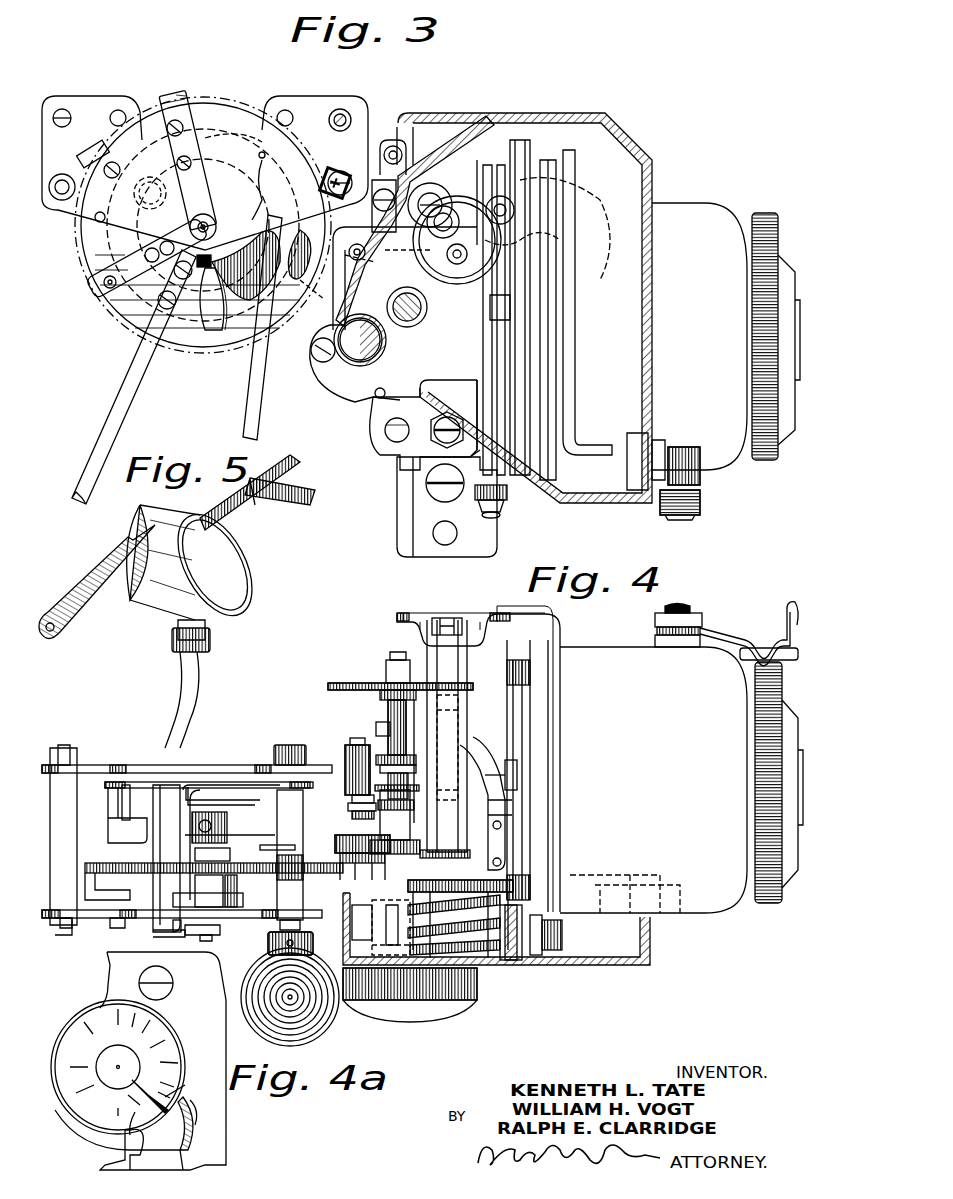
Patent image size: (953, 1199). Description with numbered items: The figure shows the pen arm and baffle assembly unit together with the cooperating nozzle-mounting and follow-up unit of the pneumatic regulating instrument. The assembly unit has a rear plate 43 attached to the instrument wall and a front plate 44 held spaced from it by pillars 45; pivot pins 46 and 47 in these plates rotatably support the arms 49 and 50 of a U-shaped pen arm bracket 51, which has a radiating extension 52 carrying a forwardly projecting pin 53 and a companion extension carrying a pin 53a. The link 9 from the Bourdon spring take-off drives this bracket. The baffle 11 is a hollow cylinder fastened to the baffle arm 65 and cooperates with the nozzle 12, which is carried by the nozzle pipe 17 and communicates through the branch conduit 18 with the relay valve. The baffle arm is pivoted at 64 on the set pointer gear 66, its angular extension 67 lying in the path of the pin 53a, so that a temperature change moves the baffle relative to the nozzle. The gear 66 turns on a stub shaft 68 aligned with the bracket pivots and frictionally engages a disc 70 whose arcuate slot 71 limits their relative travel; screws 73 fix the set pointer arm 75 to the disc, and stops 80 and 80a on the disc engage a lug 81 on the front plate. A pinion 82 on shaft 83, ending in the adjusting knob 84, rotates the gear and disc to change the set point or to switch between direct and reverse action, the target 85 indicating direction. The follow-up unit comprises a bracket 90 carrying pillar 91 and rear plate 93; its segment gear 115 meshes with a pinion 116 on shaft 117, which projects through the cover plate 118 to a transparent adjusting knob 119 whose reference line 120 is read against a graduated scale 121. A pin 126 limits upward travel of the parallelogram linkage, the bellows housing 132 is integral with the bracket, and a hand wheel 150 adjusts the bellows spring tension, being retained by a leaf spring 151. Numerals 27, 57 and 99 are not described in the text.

In FIG. 3, the link 9 is at (258, 406).
In FIG. 5, the baffle 11 is at (248, 585).
In FIG. 3, the nozzle 12 is at (238, 280).
In FIG. 5, the nozzle 12 is at (212, 638).
In FIG. 4, the nozzle 12 is at (166, 858).
In FIG. 3, the nozzle pipe 17 is at (310, 340).
In FIG. 4, the nozzle pipe 17 is at (349, 892).
In FIG. 4A, the branch conduit 18 is at (215, 1128).
In FIG. 4, the lever 27 is at (480, 845).
In FIG. 4, the rear plate 43 is at (232, 758).
In FIG. 4, the front plate 44 is at (148, 910).
In FIG. 4, the pillars 45 is at (52, 826).
In FIG. 4, the pivot pin 46 is at (223, 801).
In FIG. 4, the pivot pin 47 is at (215, 940).
In FIG. 4, the arm 49 is at (190, 780).
In FIG. 3, the arm 50 is at (193, 203).
In FIG. 4, the arm 50 is at (196, 938).
In FIG. 3, the pen arm bracket 51 is at (170, 100).
In FIG. 4, the pen arm bracket 51 is at (190, 815).
In FIG. 4, the extension 52 is at (268, 790).
In FIG. 4, the pin 53 is at (305, 803).
In FIG. 4, the pin 53a is at (107, 785).
In FIG. 3, the dial 57 is at (233, 142).
In FIG. 4, the pivot 64 is at (295, 839).
In FIG. 5, the baffle arm 65 is at (92, 575).
In FIG. 4, the set pointer gear 66 is at (97, 878).
In FIG. 5, the angular extension 67 is at (300, 490).
In FIG. 4, the angular extension 67 is at (130, 795).
In FIG. 4, the stub shaft 68 is at (228, 855).
In FIG. 3, the disc 70 is at (196, 338).
In FIG. 4, the disc 70 is at (250, 885).
In FIG. 3, the arcuate slot 71 is at (264, 183).
In FIG. 3, the screws 73 is at (140, 300).
In FIG. 3, the set pointer arm 75 is at (115, 394).
In FIG. 3, the stop 80 is at (95, 220).
In FIG. 3, the stop 80a is at (121, 174).
In FIG. 4, the lug 81 is at (107, 905).
In FIG. 4, the pinion 82 is at (240, 880).
In FIG. 4, the shaft 83 is at (300, 895).
In FIG. 4, the adjusting knob 84 is at (325, 1030).
In FIG. 3, the target 85 is at (368, 145).
In FIG. 3, the bracket 90 is at (480, 552).
In FIG. 4, the bracket 90 is at (495, 622).
In FIG. 4, the pillar 91 is at (470, 665).
In FIG. 4, the rear plate 93 is at (345, 682).
In FIG. 4A, the dial 99 is at (100, 1122).
In FIG. 3, the segment gear 115 is at (385, 335).
In FIG. 4, the segment gear 115 is at (405, 880).
In FIG. 3, the pinion 116 is at (422, 300).
In FIG. 4, the shaft 117 is at (395, 905).
In FIG. 3, the cover plate 118 is at (615, 130).
In FIG. 4, the cover plate 118 is at (620, 965).
In FIG. 4, the transparent adjusting knob 119 is at (445, 1012).
In FIG. 4A, the transparent adjusting knob 119 is at (180, 1040).
In FIG. 4A, the reference line 120 is at (180, 1090).
In FIG. 4, the graduated scale 121 is at (480, 960).
In FIG. 4, the pin 126 is at (388, 708).
In FIG. 3, the bellows housing 132 is at (660, 215).
In FIG. 4, the bellows housing 132 is at (600, 660).
In FIG. 3, the hand wheel 150 is at (763, 210).
In FIG. 4, the hand wheel 150 is at (768, 905).
In FIG. 4, the leaf spring 151 is at (782, 622).